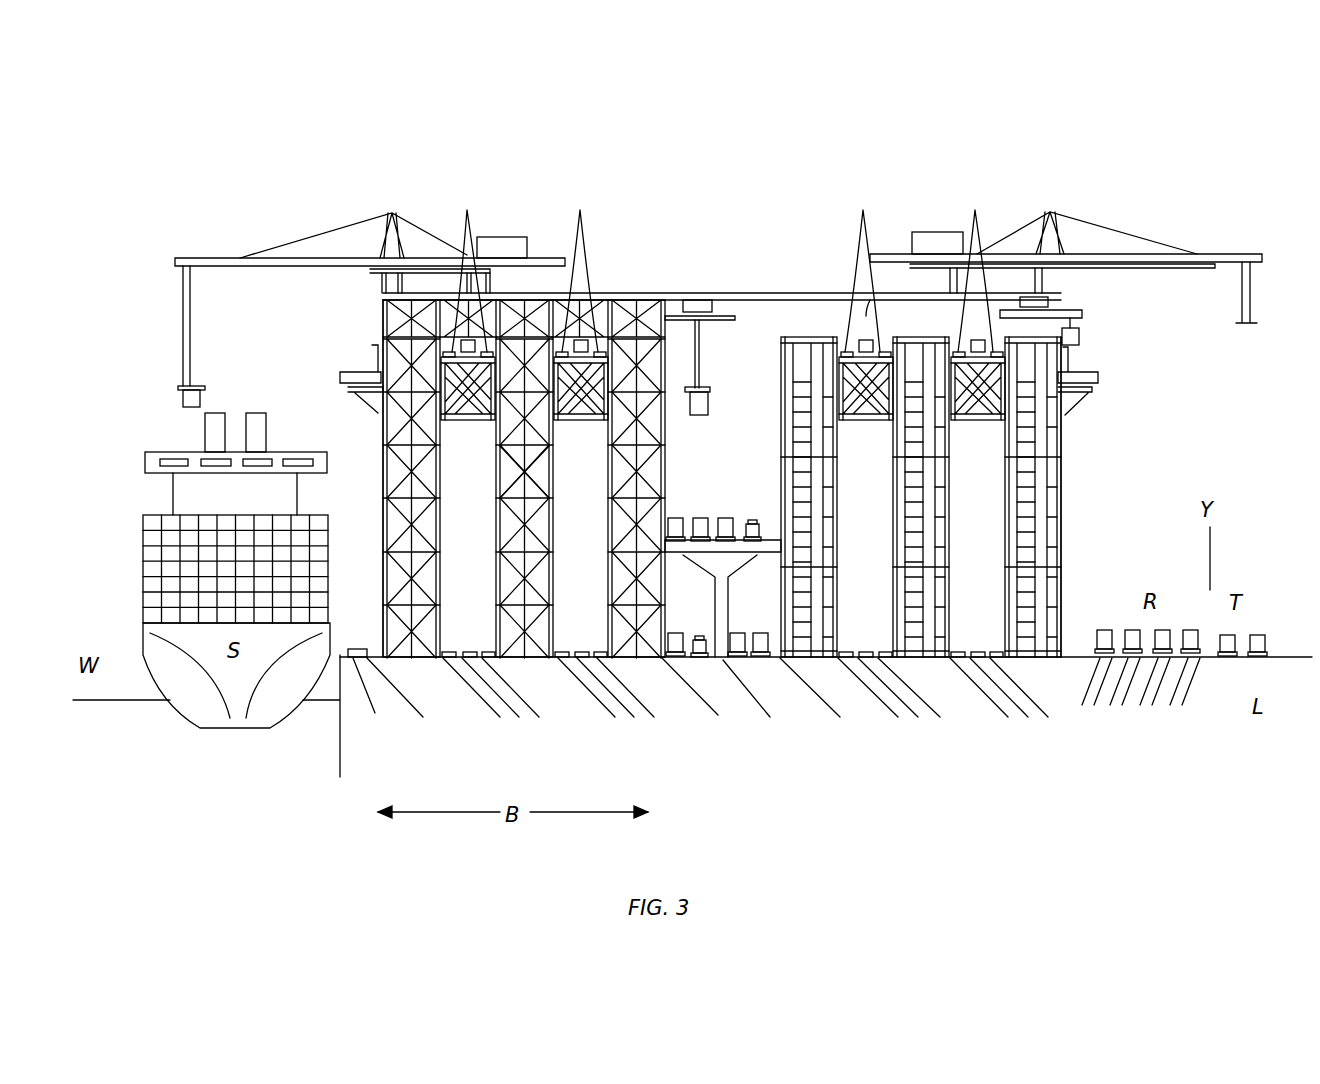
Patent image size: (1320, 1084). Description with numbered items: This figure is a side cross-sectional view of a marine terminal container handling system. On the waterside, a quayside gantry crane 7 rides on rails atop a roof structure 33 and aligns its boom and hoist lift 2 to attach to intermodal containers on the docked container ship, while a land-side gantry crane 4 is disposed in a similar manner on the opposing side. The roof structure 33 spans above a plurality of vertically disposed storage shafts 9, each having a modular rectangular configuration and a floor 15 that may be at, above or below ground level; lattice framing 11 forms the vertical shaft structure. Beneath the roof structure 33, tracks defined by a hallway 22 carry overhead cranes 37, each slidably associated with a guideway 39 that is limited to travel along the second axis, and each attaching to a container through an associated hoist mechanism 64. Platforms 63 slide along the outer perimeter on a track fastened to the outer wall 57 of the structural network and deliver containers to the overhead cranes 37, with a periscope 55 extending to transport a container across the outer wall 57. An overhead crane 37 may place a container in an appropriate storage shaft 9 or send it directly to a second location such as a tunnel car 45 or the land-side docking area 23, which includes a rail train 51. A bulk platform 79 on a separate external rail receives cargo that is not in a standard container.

The boom and hoist lift 2 is at (193, 331).
The land-side gantry crane 4 is at (1235, 253).
The quayside gantry crane 7 is at (203, 256).
The storage shaft 9 is at (806, 360).
The lattice bracing 11 is at (545, 462).
The floor 15 is at (1020, 658).
The hallway 22 is at (378, 316).
The land-side docking area 23 is at (750, 443).
The roof structure 33 is at (730, 293).
The overhead crane 37 is at (723, 306).
The guideway 39 is at (864, 320).
The tunnel car 45 is at (723, 302).
The rail train 51 is at (693, 522).
The periscope 55 is at (1078, 316).
The outer wall 57 is at (380, 470).
The platform 63 is at (335, 380).
The hoist mechanism 64 is at (705, 390).
The bulk platform 79 is at (362, 659).